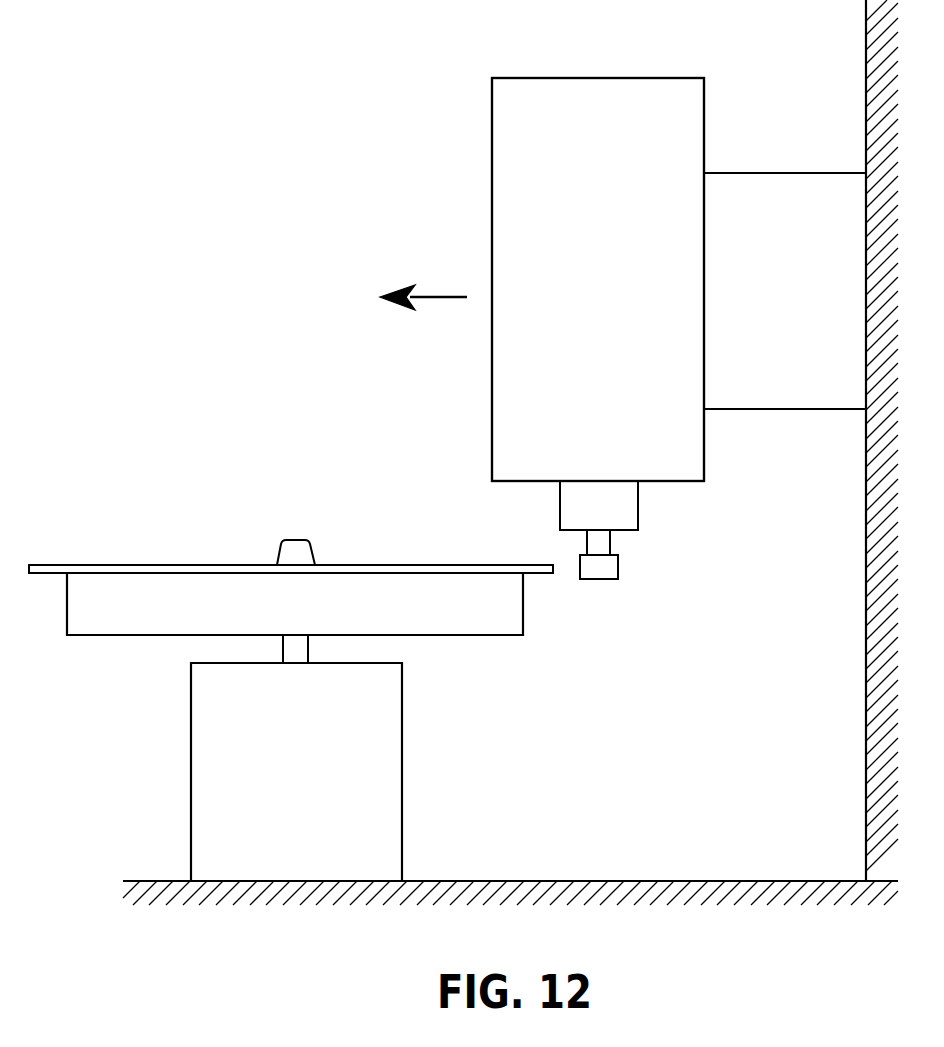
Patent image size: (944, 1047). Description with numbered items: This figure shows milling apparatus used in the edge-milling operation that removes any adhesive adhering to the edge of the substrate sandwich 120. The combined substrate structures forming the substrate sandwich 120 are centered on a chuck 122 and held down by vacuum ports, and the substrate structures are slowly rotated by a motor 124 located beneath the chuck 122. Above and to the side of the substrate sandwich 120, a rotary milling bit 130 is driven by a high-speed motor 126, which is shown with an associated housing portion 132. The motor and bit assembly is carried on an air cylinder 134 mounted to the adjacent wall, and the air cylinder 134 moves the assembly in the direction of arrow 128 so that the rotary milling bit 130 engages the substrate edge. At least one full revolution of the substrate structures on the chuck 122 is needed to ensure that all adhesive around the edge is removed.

The substrate sandwich 120 is at (97, 566).
The chuck 122 is at (518, 623).
The motor 124 is at (394, 762).
The high-speed motor 126 is at (573, 86).
The arrow 128 is at (430, 295).
The rotary milling bit 130 is at (618, 569).
The head housing 132 is at (672, 88).
The air cylinder 134 is at (800, 200).